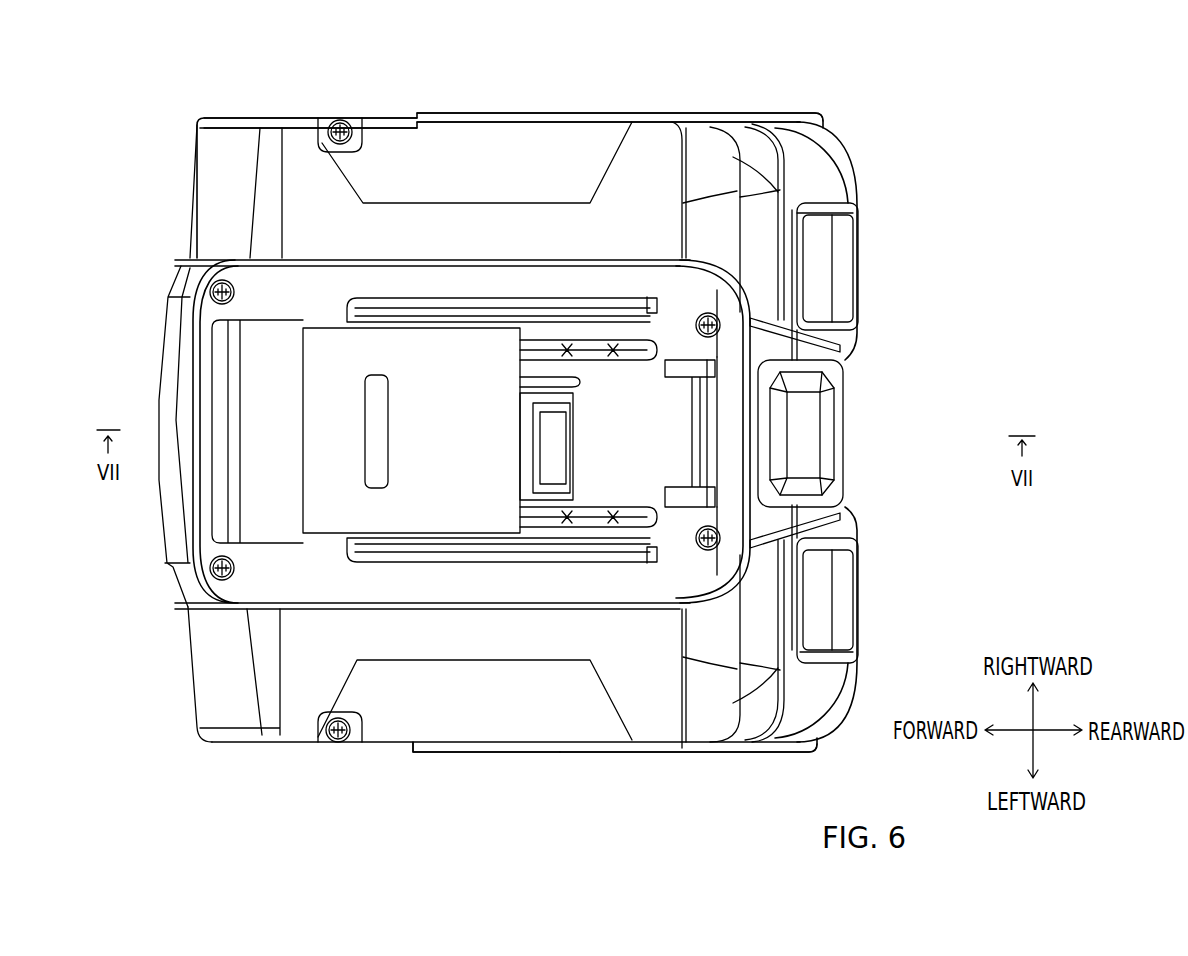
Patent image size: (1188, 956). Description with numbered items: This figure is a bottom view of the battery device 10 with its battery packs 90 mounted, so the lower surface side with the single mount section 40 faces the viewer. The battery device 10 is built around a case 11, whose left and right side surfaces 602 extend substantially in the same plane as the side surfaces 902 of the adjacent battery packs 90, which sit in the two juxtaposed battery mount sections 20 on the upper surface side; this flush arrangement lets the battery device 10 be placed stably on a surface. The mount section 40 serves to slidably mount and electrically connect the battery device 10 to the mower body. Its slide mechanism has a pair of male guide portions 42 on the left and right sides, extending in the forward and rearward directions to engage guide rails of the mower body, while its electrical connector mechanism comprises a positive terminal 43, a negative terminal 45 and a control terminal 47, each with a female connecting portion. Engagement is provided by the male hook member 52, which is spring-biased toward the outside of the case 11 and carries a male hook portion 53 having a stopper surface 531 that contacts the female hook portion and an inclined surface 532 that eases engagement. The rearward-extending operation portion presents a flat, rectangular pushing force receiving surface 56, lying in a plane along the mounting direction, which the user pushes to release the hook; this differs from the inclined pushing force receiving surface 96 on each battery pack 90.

The battery device 10 is at (177, 151).
The case 11 is at (205, 228).
The side surface of enclosure portion 602 is at (226, 118).
The side surface of battery pack 902 is at (660, 112).
The battery mount section 20 is at (733, 157).
The battery pack 90 is at (826, 187).
The pushing force receiving surface 96 is at (826, 268).
The mount section 40 is at (590, 280).
The male guide portion 42 is at (390, 768).
The positive terminal 43 is at (563, 347).
The control terminal 47 is at (543, 382).
The negative terminal 45 is at (567, 513).
The male hook portion 53 is at (661, 597).
The stopper surface 531 is at (712, 556).
The inclined surface 532 is at (683, 500).
The male hook member 52 is at (850, 428).
The pushing force receiving surface 56 is at (812, 464).